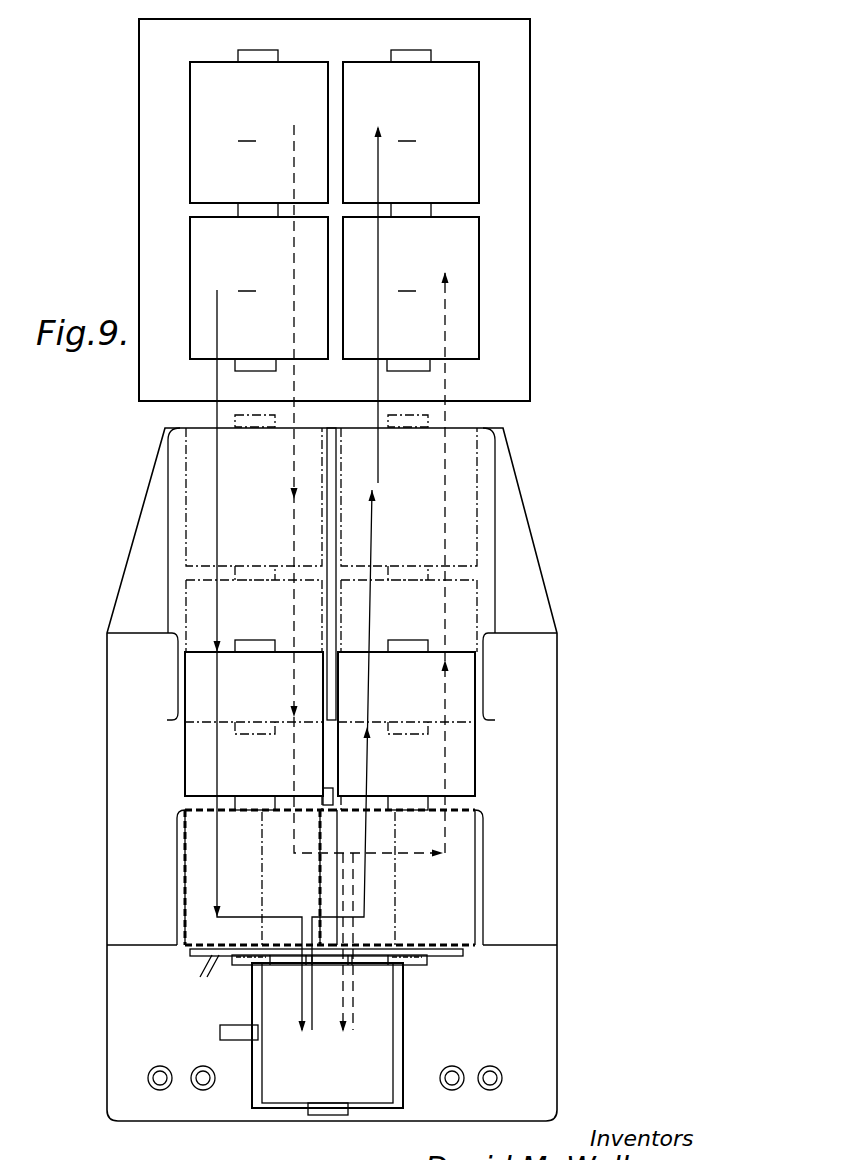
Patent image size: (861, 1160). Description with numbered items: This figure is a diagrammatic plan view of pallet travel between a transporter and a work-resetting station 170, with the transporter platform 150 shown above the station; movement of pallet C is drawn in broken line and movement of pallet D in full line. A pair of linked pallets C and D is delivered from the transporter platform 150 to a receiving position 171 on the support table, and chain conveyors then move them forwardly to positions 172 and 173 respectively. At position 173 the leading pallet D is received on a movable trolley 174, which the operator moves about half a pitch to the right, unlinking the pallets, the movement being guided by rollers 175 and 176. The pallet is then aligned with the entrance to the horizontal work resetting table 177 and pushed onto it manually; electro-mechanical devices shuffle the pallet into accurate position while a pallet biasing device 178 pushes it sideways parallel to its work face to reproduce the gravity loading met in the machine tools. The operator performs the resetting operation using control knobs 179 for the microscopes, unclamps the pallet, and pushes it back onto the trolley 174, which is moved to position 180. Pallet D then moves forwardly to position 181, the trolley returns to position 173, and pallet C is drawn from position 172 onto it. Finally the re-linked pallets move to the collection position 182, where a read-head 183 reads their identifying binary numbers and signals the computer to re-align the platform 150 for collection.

The transporter platform 150 is at (511, 214).
The work-resetting station 170 is at (541, 768).
The receiving position 171 is at (168, 567).
The pallet C position 172 is at (218, 725).
The pallet D position 173 is at (221, 877).
The movable trolley 174 is at (178, 946).
The roller 175 is at (208, 977).
The roller 176 is at (327, 810).
The work resetting table 177 is at (398, 1020).
The pallet biasing device 178 is at (220, 1031).
The control knobs 179 is at (160, 1066).
The trolley position 180 is at (434, 877).
The pallet D forward position 181 is at (441, 725).
The collection position 182 is at (495, 567).
The read-head 183 is at (332, 503).